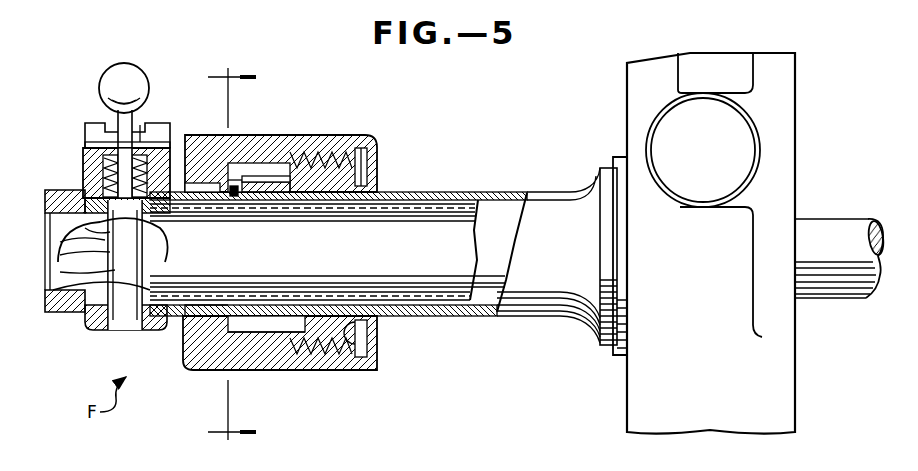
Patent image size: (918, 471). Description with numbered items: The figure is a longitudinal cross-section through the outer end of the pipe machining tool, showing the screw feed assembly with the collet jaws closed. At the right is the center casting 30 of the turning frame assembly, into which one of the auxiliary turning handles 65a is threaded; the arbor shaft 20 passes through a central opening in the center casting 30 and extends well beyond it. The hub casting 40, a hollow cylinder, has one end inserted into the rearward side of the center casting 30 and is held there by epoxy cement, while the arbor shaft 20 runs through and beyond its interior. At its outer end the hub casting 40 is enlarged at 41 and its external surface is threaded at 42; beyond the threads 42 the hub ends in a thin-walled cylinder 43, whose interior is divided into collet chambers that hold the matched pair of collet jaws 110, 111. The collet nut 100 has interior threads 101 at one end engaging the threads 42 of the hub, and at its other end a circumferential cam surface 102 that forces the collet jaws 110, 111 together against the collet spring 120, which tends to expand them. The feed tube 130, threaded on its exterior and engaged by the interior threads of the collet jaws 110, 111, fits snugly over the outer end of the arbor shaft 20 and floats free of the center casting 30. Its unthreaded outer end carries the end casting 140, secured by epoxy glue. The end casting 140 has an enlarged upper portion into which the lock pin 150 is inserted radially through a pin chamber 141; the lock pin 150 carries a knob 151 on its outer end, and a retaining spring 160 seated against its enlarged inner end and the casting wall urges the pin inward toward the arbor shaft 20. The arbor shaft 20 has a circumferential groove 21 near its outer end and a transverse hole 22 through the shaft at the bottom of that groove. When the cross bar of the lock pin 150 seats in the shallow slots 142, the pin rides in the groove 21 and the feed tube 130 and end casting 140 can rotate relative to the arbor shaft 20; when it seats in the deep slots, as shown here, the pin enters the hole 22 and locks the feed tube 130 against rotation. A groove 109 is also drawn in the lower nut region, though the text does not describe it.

The arbor shaft 20 is at (332, 264).
The circumferential groove 21 is at (133, 272).
The transverse hole 22 is at (120, 252).
The center casting 30 is at (783, 375).
The hub casting 40 is at (413, 195).
The enlarged portion 41 is at (371, 181).
The threads 42 is at (338, 146).
The thin-walled cylinder 43 is at (238, 165).
The auxiliary turning handle 65a is at (737, 130).
The collet nut 100 is at (276, 147).
The interior threads 101 is at (303, 367).
The cam surface 102 is at (188, 333).
The groove 109 is at (372, 342).
The collet jaw 110 is at (290, 177).
The collet jaw 111 is at (243, 363).
The collet spring 120 is at (233, 200).
The feed tube 130 is at (462, 200).
The end casting 140 is at (85, 326).
The pin chamber 141 is at (160, 124).
The shallow slots 142 is at (147, 140).
The lock pin 150 is at (125, 120).
The knob 151 is at (110, 86).
The retaining spring 160 is at (105, 166).